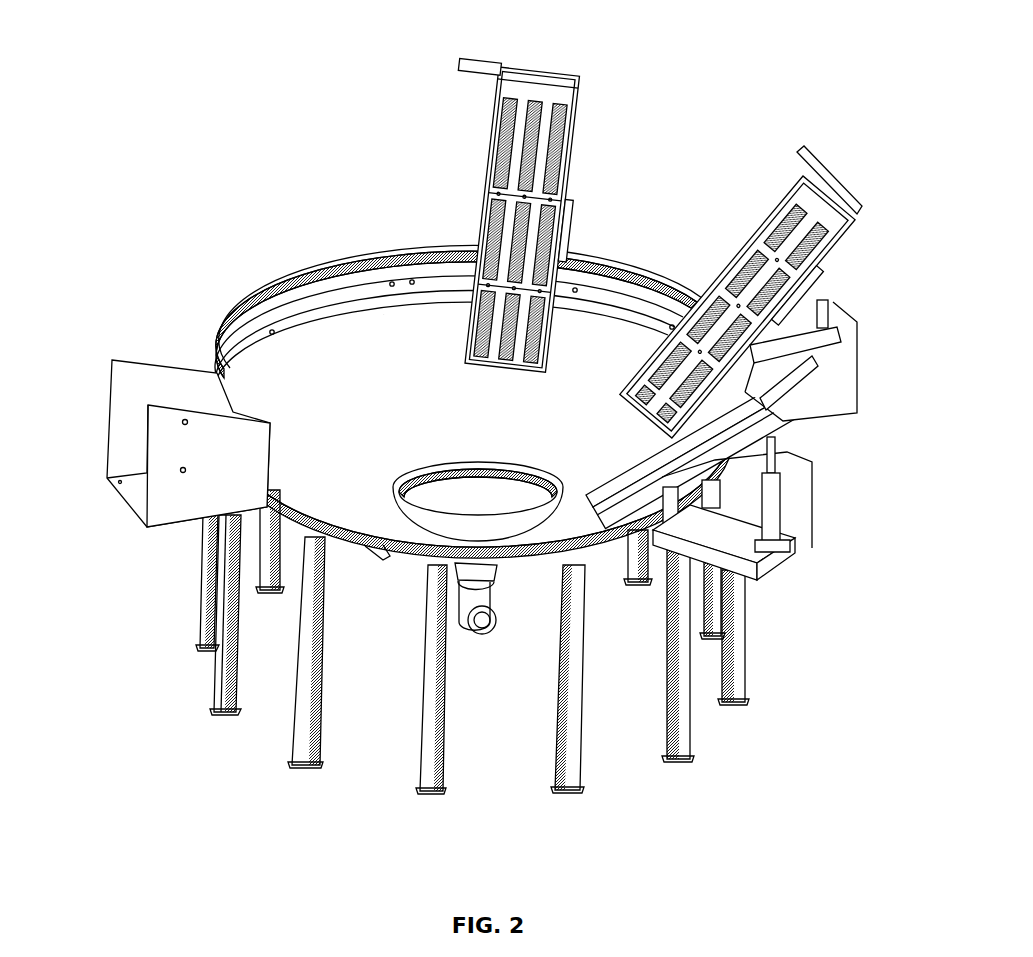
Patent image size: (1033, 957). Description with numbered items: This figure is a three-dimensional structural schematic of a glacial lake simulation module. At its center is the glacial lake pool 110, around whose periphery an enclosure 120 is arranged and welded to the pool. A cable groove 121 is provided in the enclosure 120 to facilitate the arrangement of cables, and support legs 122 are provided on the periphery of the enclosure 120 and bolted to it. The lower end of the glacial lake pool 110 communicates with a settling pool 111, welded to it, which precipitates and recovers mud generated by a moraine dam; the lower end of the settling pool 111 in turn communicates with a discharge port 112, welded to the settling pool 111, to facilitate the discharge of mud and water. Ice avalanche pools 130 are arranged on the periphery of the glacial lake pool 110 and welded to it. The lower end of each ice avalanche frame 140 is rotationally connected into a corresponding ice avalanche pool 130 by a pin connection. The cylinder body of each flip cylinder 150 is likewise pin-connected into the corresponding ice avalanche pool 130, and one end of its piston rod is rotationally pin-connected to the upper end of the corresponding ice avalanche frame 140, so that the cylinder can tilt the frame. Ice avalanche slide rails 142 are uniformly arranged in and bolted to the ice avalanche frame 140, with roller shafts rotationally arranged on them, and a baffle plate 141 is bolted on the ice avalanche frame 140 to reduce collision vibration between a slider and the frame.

The glacial lake pool 110 is at (343, 363).
The settling pool 111 is at (530, 515).
The discharge port 112 is at (480, 640).
The enclosure 120 is at (258, 284).
The cable groove 121 is at (247, 334).
The support legs 122 is at (302, 750).
The ice avalanche pool 130 is at (825, 385).
The ice avalanche frame 140 is at (540, 103).
The baffle plate 141 is at (582, 193).
The ice avalanche slide rails 142 is at (777, 212).
The flip cylinder 150 is at (781, 514).